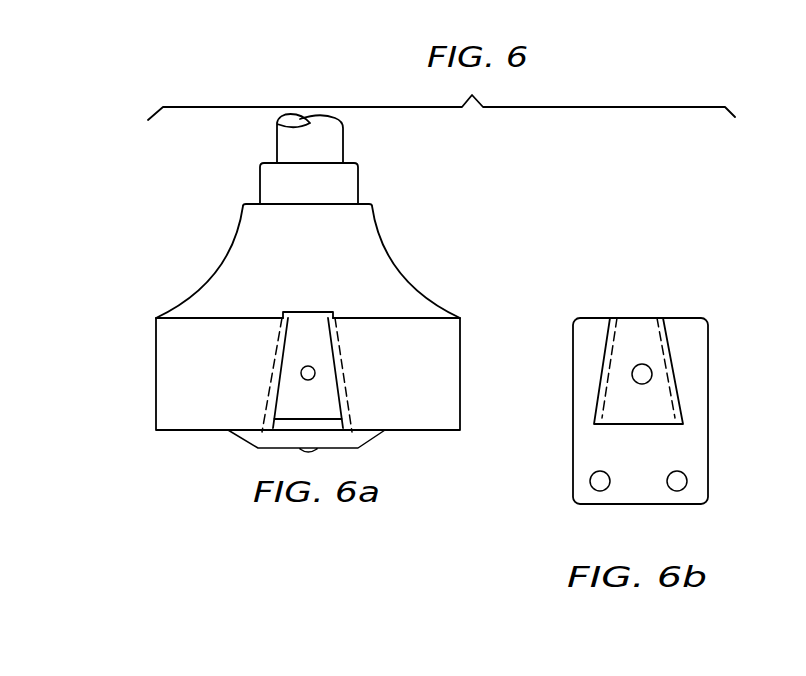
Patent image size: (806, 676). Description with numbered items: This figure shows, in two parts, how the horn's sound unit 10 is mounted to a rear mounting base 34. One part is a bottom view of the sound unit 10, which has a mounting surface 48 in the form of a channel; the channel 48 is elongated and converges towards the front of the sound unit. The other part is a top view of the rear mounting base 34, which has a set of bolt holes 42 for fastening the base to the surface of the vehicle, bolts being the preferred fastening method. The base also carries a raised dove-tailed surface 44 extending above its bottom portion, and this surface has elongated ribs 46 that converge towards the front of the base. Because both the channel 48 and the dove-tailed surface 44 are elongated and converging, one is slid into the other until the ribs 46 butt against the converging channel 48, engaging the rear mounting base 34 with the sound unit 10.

In FIG. 6A, the sound unit 10 is at (403, 262).
In FIG. 6A, the mounting surface 48 is at (325, 406).
In FIG. 6B, the rear mounting base 34 is at (708, 412).
In FIG. 6B, the raised dove-tailed surface 44 is at (639, 333).
In FIG. 6B, the elongated ribs 46 is at (671, 354).
In FIG. 6B, the bolt holes 42 is at (637, 373).